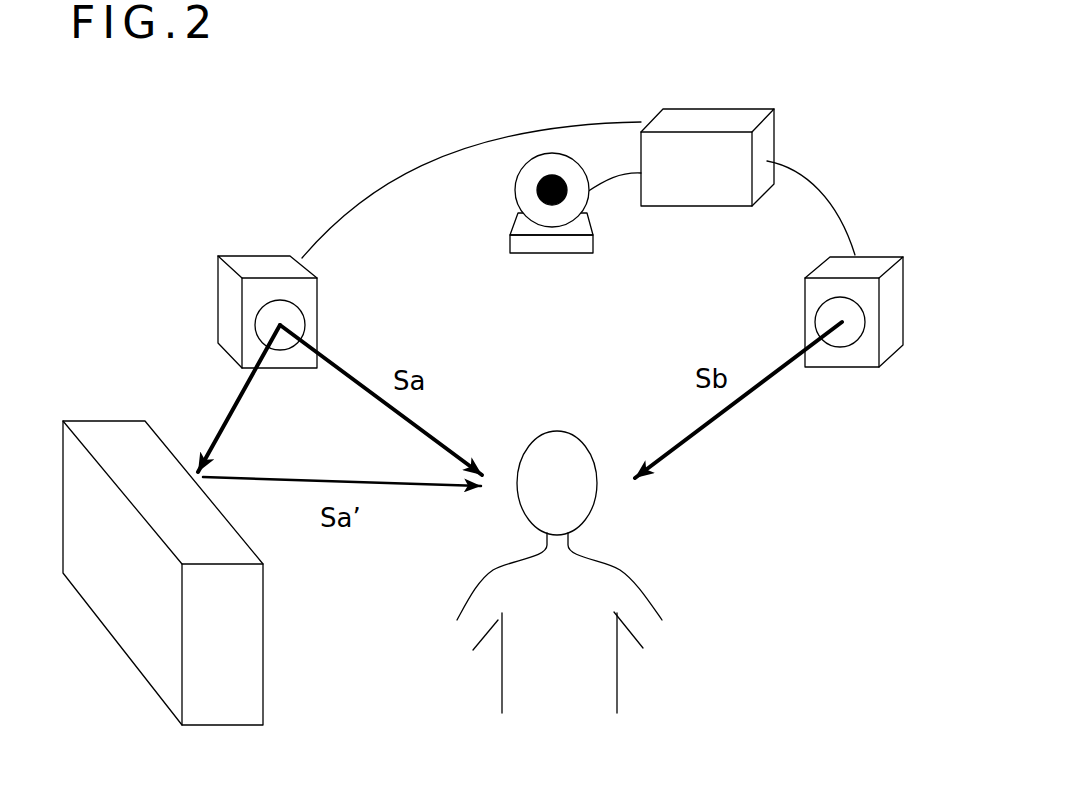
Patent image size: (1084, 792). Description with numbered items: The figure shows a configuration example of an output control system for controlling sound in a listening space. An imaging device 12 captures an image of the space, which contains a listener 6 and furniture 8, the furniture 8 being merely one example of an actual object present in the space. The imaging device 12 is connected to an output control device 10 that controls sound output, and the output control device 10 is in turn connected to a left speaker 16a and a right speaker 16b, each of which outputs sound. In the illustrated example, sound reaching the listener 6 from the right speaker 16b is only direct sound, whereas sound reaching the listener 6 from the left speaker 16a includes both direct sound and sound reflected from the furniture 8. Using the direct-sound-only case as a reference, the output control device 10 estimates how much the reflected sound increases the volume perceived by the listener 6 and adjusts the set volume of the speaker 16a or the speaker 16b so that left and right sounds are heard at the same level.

The listener 6 is at (640, 583).
The furniture 8 is at (97, 421).
The output control device 10 is at (712, 109).
The imaging device 12 is at (593, 243).
The speaker 16a is at (252, 256).
The speaker 16b is at (893, 256).